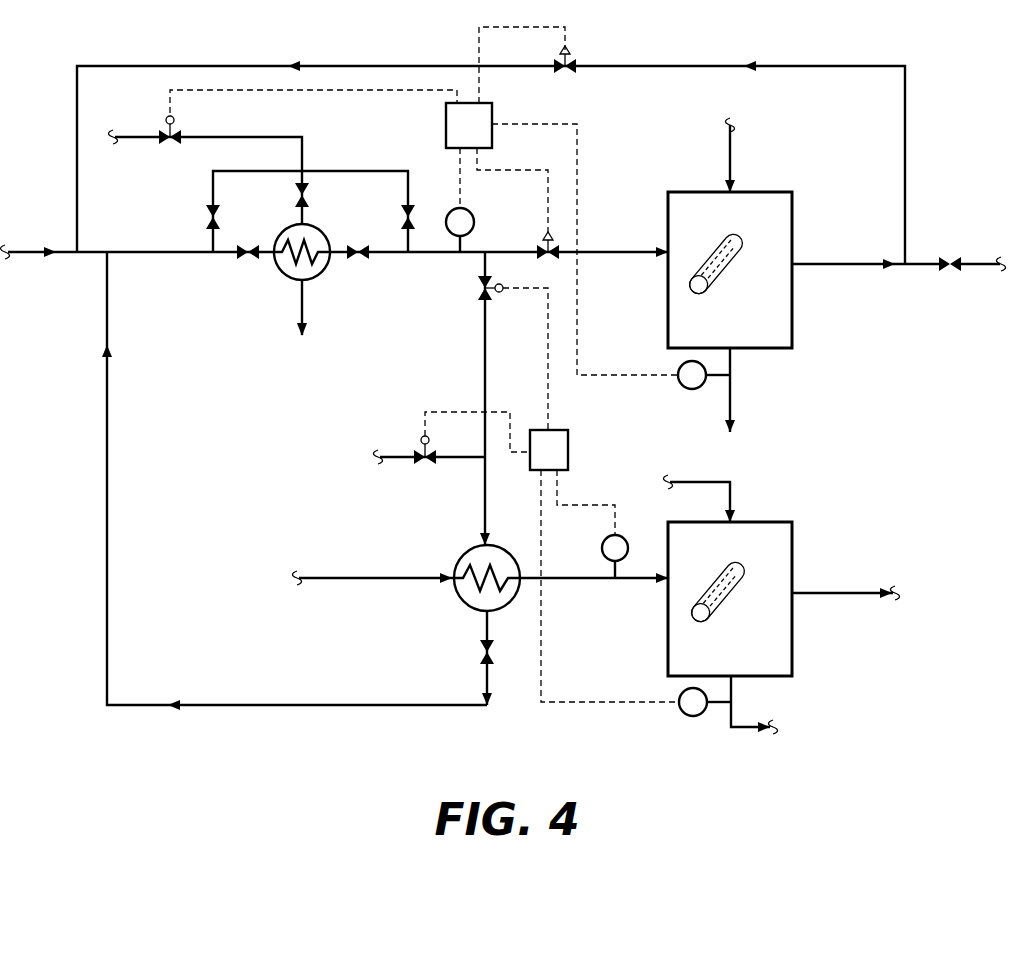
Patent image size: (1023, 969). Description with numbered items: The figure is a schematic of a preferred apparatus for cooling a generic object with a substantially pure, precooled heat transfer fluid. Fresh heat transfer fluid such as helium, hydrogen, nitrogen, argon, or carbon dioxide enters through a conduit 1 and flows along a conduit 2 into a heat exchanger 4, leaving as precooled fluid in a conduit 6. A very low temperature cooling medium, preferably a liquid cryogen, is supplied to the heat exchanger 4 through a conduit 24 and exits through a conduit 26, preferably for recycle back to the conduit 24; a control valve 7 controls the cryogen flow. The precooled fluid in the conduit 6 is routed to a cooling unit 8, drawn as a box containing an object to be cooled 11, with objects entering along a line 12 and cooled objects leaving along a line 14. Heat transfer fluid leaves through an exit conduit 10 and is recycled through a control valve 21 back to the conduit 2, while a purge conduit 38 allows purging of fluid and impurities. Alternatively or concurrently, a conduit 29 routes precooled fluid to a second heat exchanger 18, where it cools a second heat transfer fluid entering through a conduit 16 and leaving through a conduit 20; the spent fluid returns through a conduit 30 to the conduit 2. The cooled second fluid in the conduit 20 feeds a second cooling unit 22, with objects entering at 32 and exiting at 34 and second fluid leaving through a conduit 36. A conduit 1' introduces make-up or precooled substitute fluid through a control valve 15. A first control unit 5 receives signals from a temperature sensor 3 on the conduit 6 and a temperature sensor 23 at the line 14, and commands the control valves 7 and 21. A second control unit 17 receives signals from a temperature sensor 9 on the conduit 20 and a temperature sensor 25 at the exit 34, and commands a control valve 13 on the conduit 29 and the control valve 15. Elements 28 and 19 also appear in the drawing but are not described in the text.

The conduit 1 is at (54, 232).
The conduit 2 is at (150, 250).
The conduit 24 is at (130, 135).
The control valve 7 is at (160, 148).
The bypass line 28 is at (365, 171).
The heat exchanger 4 is at (320, 272).
The conduit 26 is at (302, 300).
The control unit C1 5 is at (494, 110).
The temperature sensor 3 is at (470, 210).
The conduit 6 is at (437, 258).
The control valve 19 is at (538, 246).
The control valve 13 is at (495, 298).
The control valve 21 is at (575, 48).
The cooling unit 8 is at (665, 209).
The line 12 is at (735, 147).
The object to be cooled 11 is at (720, 277).
The heat transfer fluid exit conduit 10 is at (840, 262).
The purge conduit 38 is at (950, 255).
The line 14 is at (732, 390).
The temperature sensor 23 is at (685, 390).
The conduit 29 is at (483, 359).
The control valve 15 is at (418, 440).
The conduit 1' is at (422, 473).
The control unit C2 17 is at (562, 430).
The second heat exchanger 18 is at (510, 548).
The conduit 16 is at (363, 575).
The conduit 20 is at (566, 575).
The temperature sensor 9 is at (628, 542).
The entry of objects to be cooled 32 is at (690, 480).
The second cooling unit 22 is at (770, 522).
The conduit 36 is at (845, 590).
The conduit 30 is at (108, 556).
The temperature sensor 25 is at (683, 713).
The exit of cooled objects 34 is at (745, 730).